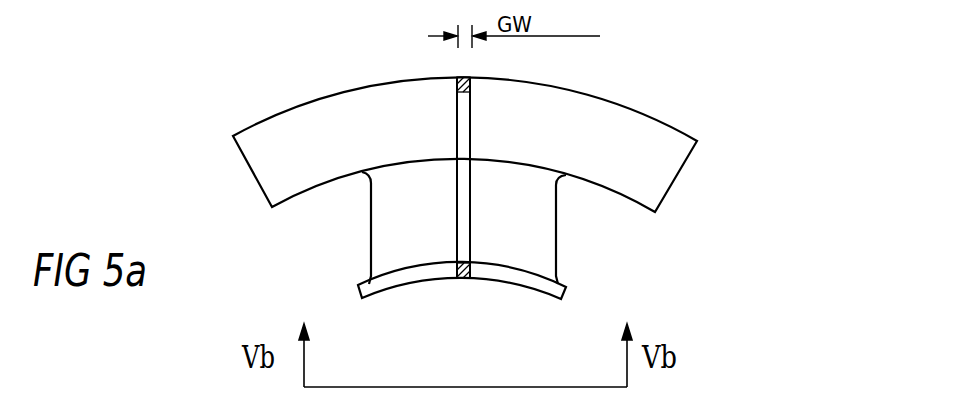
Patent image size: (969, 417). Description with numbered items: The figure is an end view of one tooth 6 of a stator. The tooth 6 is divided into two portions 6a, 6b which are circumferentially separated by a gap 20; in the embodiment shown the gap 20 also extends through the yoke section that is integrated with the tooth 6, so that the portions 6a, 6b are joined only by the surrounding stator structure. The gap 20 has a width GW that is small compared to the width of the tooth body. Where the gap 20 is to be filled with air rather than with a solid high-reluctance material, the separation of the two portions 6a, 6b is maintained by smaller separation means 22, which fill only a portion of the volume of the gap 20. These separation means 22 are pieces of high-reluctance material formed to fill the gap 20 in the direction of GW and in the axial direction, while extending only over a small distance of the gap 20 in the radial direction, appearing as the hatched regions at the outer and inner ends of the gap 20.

The tooth 6 is at (428, 235).
The first tooth portion 6a is at (556, 249).
The second tooth portion 6b is at (378, 247).
The gap 20 is at (470, 194).
The separation means 22 is at (472, 77).